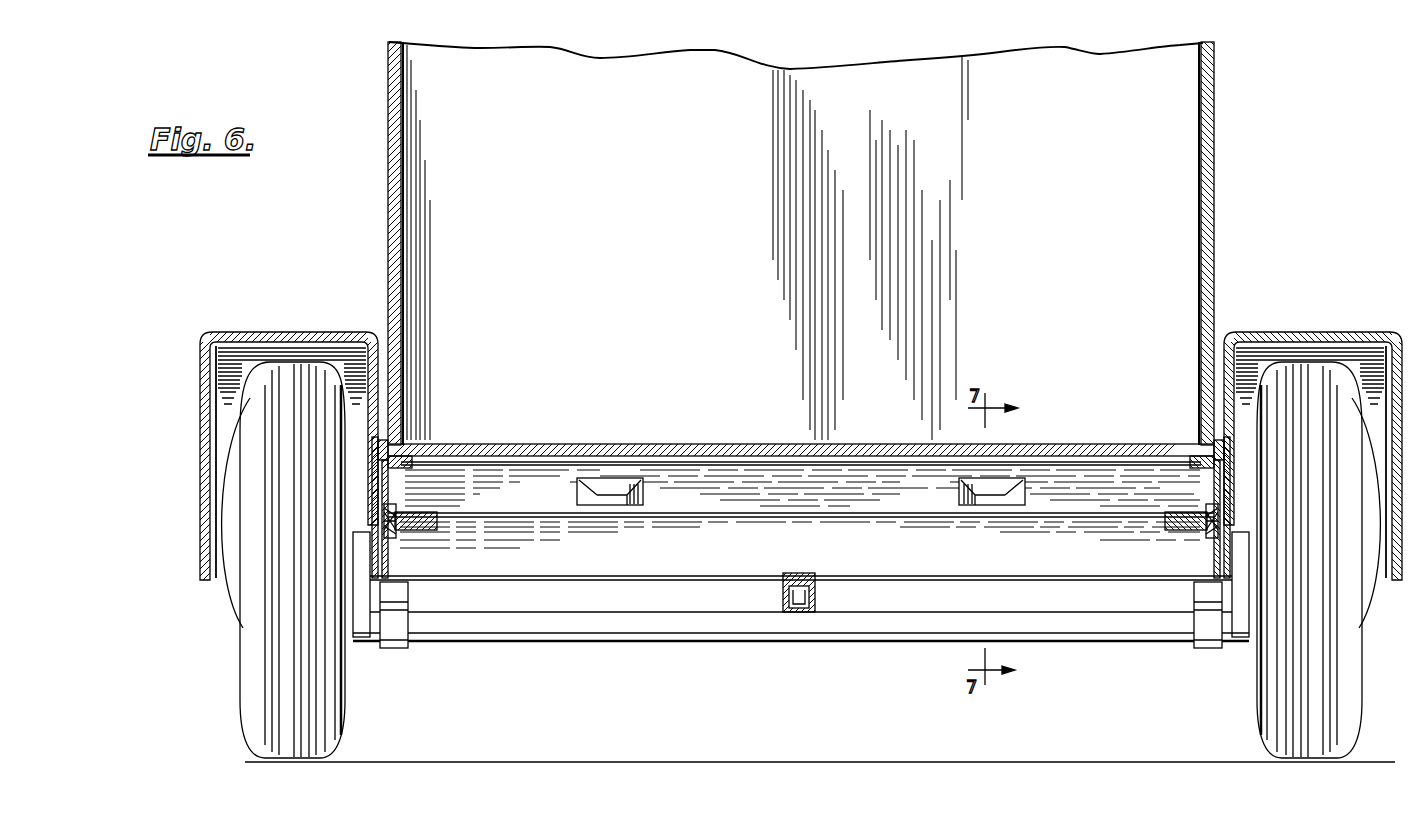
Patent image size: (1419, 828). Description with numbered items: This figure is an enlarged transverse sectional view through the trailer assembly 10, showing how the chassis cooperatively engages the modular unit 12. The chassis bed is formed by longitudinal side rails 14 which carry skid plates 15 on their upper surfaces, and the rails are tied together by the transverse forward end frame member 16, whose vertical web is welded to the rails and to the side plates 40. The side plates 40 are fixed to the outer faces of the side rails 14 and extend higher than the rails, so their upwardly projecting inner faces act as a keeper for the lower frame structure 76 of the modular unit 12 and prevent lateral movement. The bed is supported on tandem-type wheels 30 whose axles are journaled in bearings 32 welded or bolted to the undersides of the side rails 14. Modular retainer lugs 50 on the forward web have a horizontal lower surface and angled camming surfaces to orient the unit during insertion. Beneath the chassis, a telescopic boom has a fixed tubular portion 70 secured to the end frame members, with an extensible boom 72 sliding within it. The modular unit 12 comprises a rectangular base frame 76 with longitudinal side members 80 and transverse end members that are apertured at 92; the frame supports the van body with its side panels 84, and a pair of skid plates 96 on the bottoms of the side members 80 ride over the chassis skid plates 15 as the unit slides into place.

The wheeled container apparatus 10 is at (203, 318).
The modular unit 12 is at (796, 243).
The longitudinal side rail 14 is at (388, 548).
The skid plate 15 is at (404, 528).
The transverse forward end frame member 16 is at (770, 569).
The tandem-type wheel 30 is at (345, 720).
The bearing 32 is at (407, 650).
The side plate 40 is at (388, 484).
The modular retainer lug 50 is at (614, 498).
The fixed portion of telescopic boom 70 is at (801, 592).
The extensible boom 72 is at (788, 596).
The base frame structure 76 is at (720, 486).
The longitudinal side member 80 is at (412, 470).
The side panel 84 is at (389, 178).
The aperture 92 is at (608, 477).
The skid plate 96 is at (437, 521).